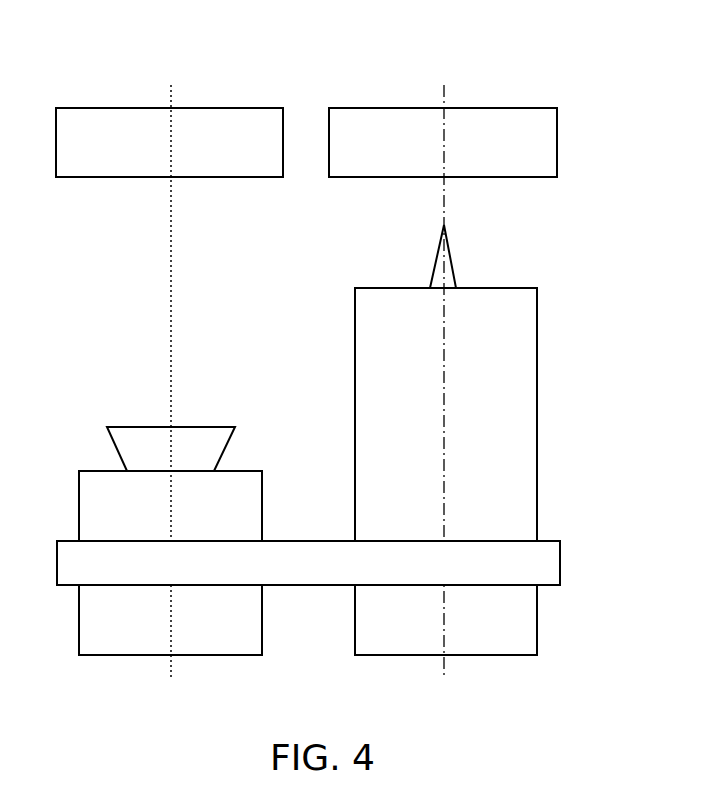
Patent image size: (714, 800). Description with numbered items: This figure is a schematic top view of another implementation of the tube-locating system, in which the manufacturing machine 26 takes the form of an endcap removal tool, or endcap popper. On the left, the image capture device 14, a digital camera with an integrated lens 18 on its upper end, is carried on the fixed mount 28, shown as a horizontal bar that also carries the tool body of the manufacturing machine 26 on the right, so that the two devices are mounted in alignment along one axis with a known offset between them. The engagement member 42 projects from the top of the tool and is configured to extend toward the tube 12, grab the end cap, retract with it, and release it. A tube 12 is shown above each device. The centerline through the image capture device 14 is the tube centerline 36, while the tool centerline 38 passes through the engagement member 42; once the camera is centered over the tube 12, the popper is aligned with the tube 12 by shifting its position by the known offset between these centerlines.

The tube 12 is at (120, 116).
The image capture device 14 is at (138, 642).
The lens 18 is at (137, 437).
The manufacturing machine 26 is at (550, 596).
The fixed mount 28 is at (313, 575).
The tube centerline 36 is at (172, 285).
The tool centerline 38 is at (445, 200).
The engagement member 42 is at (451, 262).